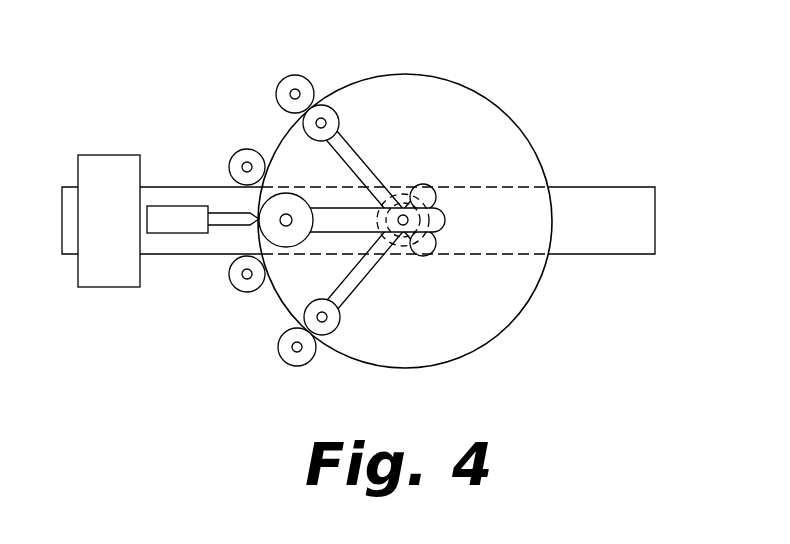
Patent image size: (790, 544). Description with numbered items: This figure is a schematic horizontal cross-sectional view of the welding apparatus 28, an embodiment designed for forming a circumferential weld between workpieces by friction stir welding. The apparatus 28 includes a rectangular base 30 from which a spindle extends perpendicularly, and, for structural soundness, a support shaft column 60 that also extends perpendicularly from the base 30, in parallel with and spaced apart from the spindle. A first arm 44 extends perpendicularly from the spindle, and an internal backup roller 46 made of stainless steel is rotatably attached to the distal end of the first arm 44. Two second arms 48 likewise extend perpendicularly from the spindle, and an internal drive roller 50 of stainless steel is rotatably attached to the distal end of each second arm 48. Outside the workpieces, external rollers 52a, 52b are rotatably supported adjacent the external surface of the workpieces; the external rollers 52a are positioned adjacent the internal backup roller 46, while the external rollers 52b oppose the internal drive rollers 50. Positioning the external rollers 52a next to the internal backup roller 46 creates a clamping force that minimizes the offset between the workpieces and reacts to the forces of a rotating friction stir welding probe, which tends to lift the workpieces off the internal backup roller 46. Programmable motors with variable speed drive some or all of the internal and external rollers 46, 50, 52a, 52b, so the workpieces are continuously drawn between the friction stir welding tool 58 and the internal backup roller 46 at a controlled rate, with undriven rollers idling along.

The welding apparatus 28 is at (561, 70).
The rectangular base 30 is at (638, 185).
The first arm 44 is at (353, 222).
The internal backup roller 46 is at (286, 247).
The second arms 48 is at (362, 165).
The internal drive roller 50 is at (337, 107).
The external rollers 52a is at (236, 155).
The external rollers 52b is at (277, 82).
The friction stir welding tool 58 is at (182, 234).
The support shaft column 60 is at (108, 277).